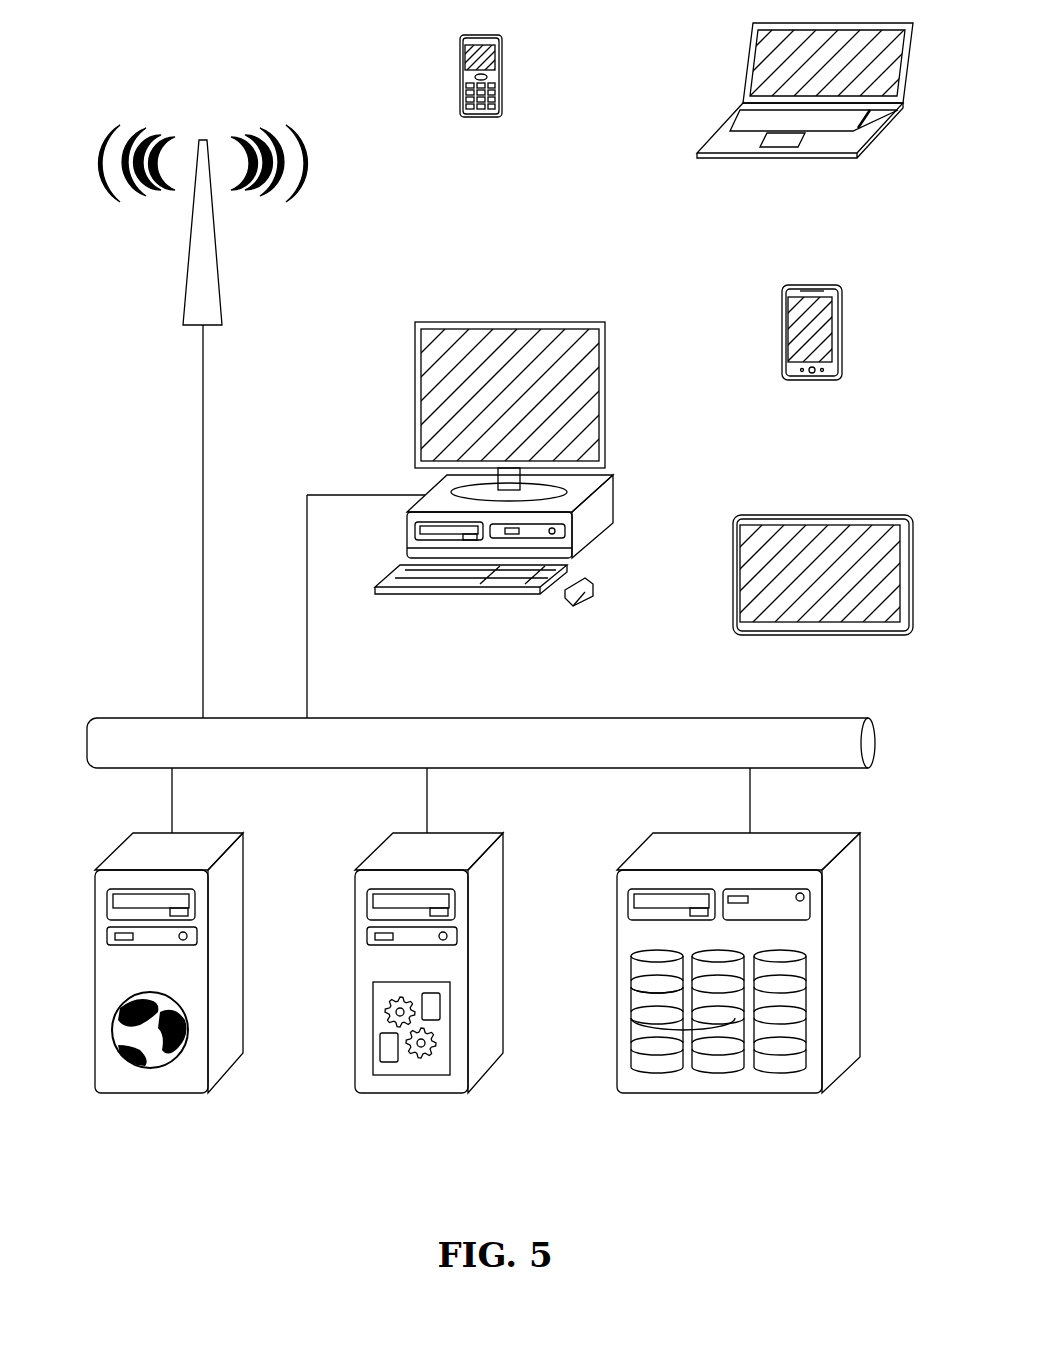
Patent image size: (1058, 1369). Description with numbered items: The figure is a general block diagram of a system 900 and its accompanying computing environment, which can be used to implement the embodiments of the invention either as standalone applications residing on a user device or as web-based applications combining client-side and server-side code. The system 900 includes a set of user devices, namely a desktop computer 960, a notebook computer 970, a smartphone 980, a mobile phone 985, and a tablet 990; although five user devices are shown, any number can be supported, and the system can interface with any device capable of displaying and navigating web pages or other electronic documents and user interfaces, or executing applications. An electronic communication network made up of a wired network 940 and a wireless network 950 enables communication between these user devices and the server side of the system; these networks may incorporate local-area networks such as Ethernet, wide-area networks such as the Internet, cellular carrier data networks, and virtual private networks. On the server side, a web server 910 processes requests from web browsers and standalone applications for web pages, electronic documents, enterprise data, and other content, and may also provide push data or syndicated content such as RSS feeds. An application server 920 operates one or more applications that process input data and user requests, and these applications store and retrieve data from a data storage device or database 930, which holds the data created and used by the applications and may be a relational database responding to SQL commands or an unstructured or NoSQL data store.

The system 900 is at (162, 50).
The web server 910 is at (157, 1085).
The application server 920 is at (413, 1085).
The data storage device or database 930 is at (708, 1070).
The wired network 940 is at (638, 752).
The wireless network 950 is at (226, 230).
The desktop computer 960 is at (488, 610).
The notebook computer 970 is at (797, 165).
The smartphone 980 is at (815, 393).
The mobile phone 985 is at (485, 137).
The tablet 990 is at (817, 630).